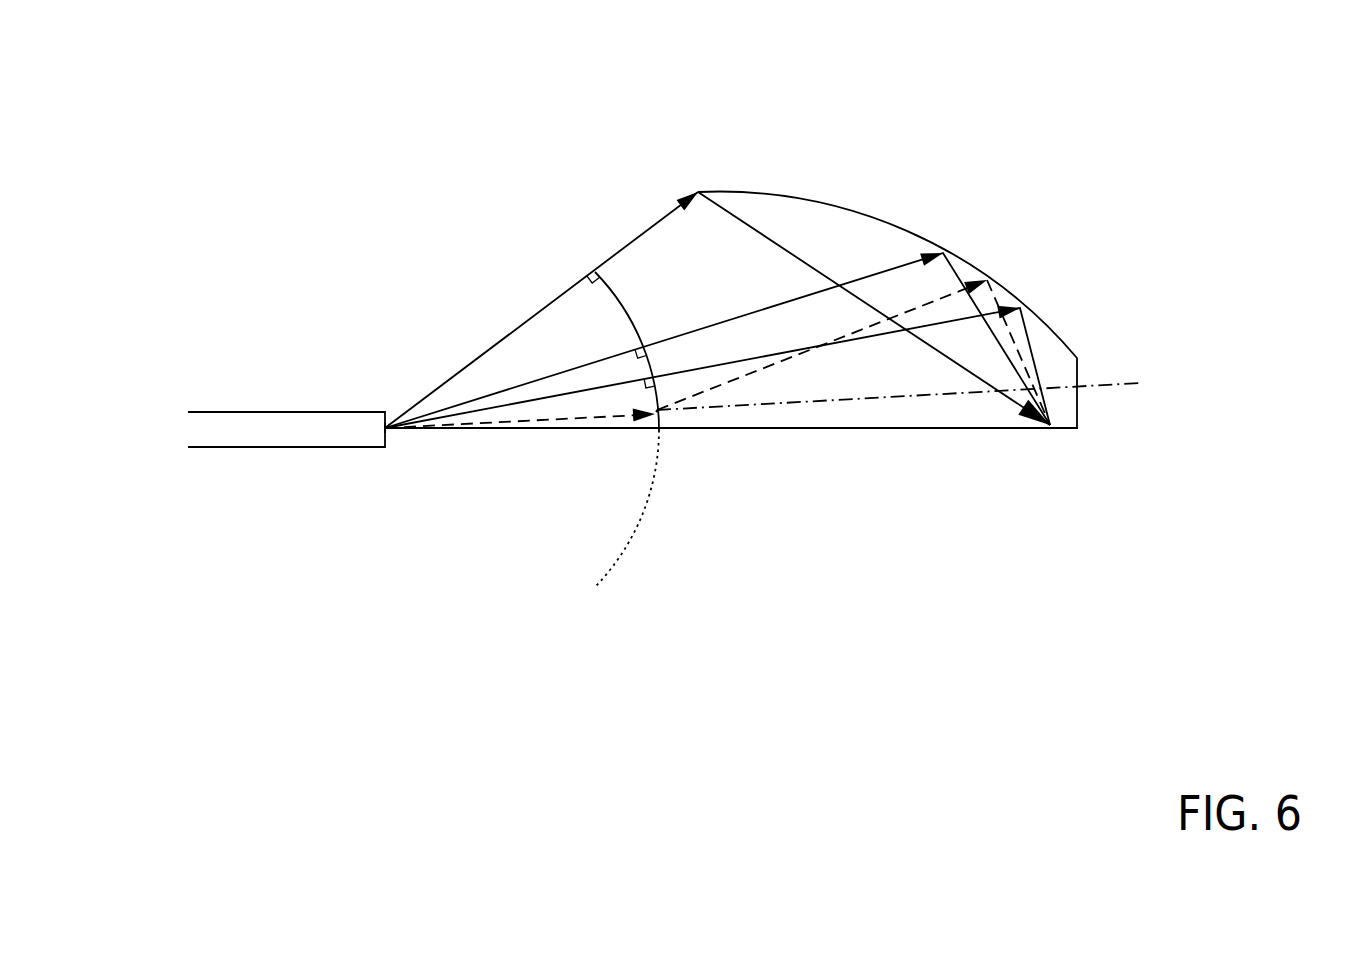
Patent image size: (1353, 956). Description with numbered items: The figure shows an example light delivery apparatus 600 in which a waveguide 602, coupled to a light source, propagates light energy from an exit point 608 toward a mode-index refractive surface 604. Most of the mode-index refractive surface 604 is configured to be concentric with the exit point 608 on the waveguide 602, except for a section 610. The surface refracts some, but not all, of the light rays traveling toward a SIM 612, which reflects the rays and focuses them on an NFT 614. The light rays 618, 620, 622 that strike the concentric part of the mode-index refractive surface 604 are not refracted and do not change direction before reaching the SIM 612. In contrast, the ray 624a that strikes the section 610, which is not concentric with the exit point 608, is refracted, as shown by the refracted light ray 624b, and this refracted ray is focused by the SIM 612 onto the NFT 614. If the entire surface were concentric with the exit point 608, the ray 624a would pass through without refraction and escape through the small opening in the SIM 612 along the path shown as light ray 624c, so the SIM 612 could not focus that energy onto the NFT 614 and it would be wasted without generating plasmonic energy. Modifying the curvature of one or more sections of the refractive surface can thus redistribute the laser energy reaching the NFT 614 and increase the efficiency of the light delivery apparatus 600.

The light delivery apparatus 600 is at (145, 118).
The waveguide 602 is at (243, 412).
The mode-index refractive surface 604 is at (632, 315).
The exit point 608 is at (387, 432).
The section 610 is at (658, 414).
The SIM 612 is at (822, 191).
The NFT 614 is at (1045, 430).
The light ray 618 is at (450, 376).
The light ray 620 is at (545, 374).
The light ray 622 is at (537, 424).
The ray 624a is at (592, 424).
The refracted light ray 624b is at (770, 365).
The light ray 624c is at (1100, 385).